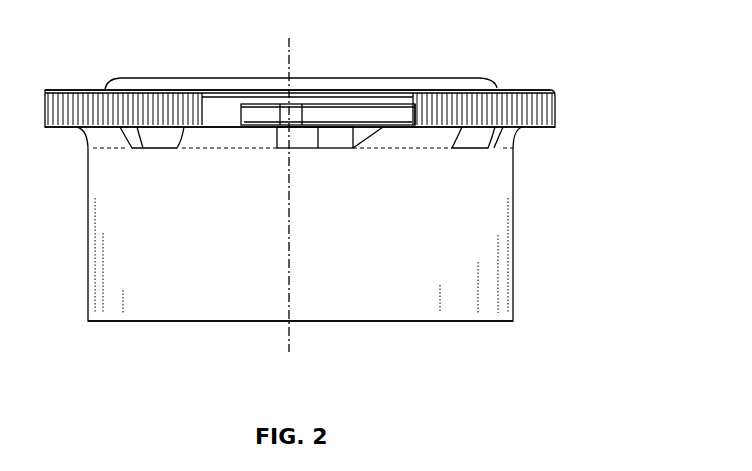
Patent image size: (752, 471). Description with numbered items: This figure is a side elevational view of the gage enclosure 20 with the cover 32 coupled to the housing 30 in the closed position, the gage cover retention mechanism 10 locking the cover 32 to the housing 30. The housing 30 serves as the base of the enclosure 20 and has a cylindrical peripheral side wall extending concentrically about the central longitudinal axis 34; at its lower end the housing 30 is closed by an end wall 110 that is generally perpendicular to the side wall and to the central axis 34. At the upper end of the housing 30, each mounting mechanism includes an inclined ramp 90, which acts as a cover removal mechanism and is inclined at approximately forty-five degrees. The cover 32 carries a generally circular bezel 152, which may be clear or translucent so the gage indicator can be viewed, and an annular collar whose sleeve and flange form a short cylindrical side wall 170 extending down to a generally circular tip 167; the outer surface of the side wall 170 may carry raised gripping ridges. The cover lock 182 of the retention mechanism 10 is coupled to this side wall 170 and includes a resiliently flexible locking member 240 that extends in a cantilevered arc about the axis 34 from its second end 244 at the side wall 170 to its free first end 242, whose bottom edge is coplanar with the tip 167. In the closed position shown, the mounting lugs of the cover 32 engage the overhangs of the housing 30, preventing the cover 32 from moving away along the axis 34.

The gage cover retention mechanism 10 is at (346, 182).
The enclosure 20 is at (540, 193).
The housing 30 is at (513, 257).
The cover 32 is at (552, 88).
The central longitudinal axis 34 is at (289, 326).
The inclined ramp 90 is at (367, 142).
The end wall 110 is at (455, 321).
The bezel 152 is at (328, 78).
The tip 167 is at (557, 127).
The side wall 170 is at (555, 108).
The cover lock 182 is at (342, 106).
The locking member 240 is at (380, 115).
The first end 242 is at (258, 104).
The second end 244 is at (403, 113).